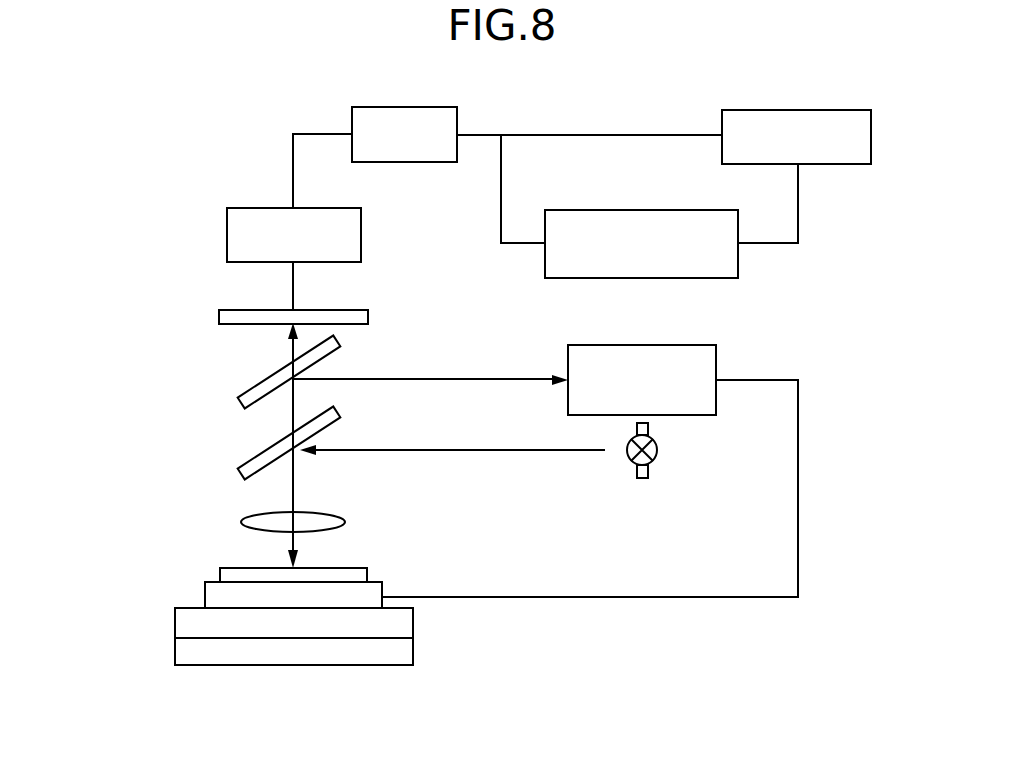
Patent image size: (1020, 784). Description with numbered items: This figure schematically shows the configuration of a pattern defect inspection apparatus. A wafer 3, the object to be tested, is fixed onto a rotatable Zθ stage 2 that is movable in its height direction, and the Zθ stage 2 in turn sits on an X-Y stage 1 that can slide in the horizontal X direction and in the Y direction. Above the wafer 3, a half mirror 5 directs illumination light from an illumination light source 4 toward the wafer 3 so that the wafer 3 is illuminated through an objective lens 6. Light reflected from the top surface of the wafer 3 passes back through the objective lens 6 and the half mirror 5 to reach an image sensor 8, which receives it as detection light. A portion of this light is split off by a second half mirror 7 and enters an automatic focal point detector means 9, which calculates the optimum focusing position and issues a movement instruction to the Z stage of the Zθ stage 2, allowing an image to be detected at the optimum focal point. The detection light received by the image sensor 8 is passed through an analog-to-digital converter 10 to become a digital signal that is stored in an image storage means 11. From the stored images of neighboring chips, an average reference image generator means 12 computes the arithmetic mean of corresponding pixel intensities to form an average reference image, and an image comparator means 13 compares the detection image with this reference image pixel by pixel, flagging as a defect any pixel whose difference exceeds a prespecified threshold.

The X-Y stage 1 is at (175, 625).
The Zθ stage 2 is at (205, 595).
The wafer 3 is at (220, 577).
The illumination light source 4 is at (643, 478).
The half mirror 5 is at (240, 468).
The objective lens 6 is at (345, 522).
The half mirror 7 is at (240, 397).
The image sensor 8 is at (219, 317).
The automatic focal point detector means 9 is at (643, 345).
The analog-to-digital (A/D) converter 10 is at (227, 235).
The image storage means 11 is at (389, 106).
The average reference image generator means 12 is at (645, 210).
The image comparator means 13 is at (796, 110).